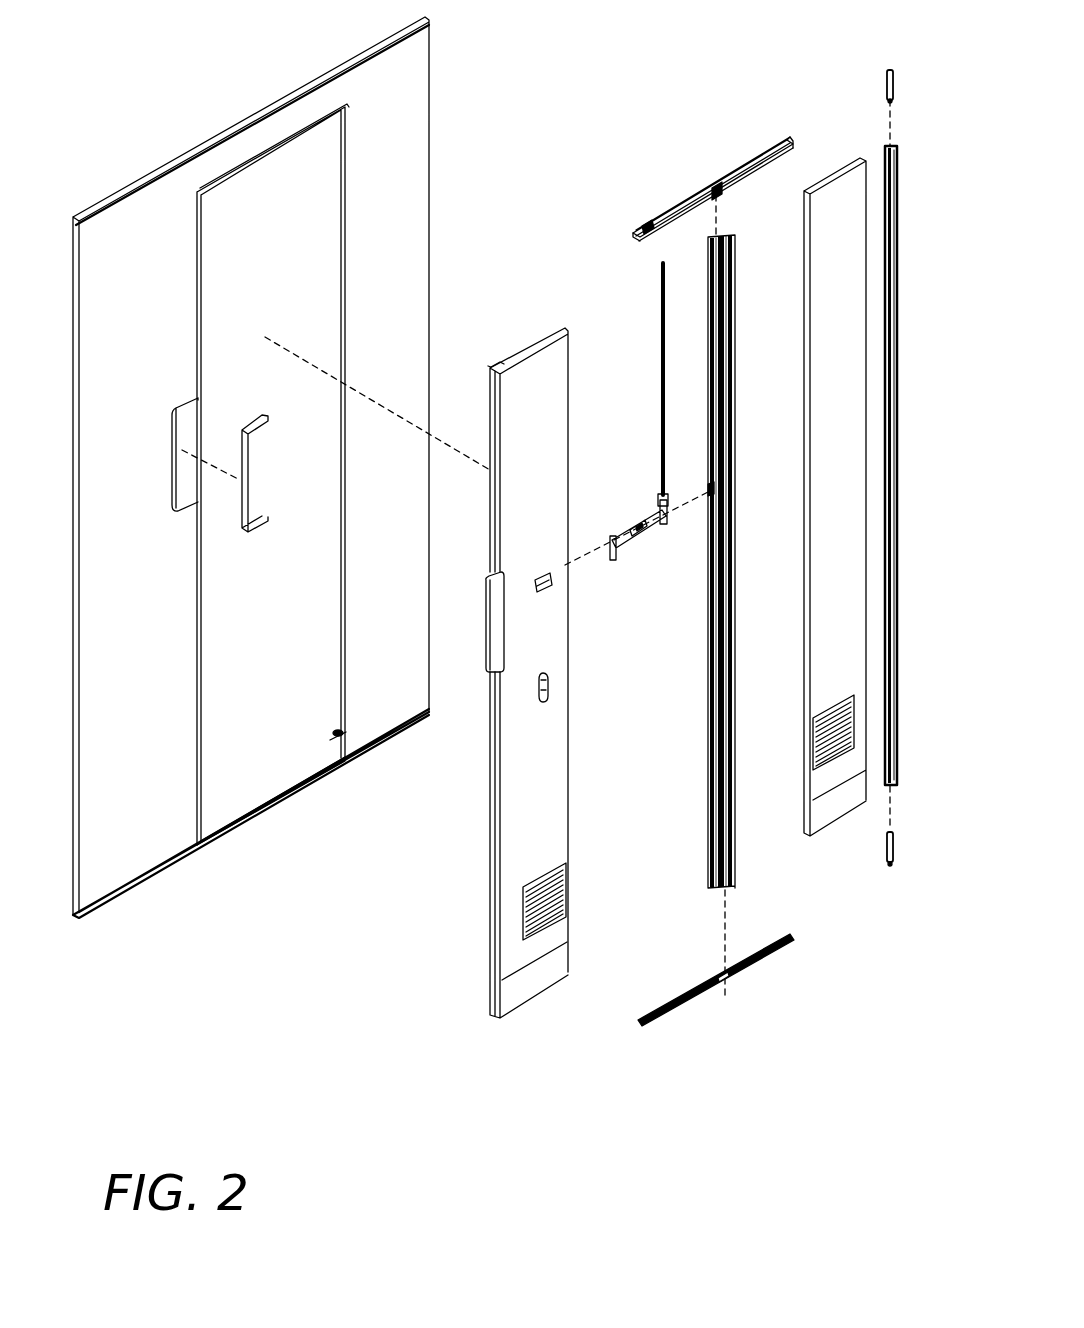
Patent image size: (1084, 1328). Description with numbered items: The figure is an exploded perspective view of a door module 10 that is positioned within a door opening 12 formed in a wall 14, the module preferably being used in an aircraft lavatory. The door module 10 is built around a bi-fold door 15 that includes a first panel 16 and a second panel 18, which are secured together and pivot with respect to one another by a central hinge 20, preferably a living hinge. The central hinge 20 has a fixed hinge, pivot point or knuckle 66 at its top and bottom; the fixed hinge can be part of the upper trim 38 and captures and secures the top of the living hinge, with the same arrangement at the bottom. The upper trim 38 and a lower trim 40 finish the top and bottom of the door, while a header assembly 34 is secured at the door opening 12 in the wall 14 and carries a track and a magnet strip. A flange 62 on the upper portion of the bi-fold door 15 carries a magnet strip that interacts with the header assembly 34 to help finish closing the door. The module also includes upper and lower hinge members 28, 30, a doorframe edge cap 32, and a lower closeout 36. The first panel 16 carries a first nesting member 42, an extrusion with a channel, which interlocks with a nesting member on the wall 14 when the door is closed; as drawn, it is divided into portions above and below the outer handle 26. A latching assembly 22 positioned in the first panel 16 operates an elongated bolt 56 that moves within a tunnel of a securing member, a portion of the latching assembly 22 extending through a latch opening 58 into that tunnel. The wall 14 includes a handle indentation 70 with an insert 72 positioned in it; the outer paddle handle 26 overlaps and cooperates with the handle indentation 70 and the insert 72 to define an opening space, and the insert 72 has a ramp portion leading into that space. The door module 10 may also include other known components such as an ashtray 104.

The door module 10 is at (570, 120).
The door opening 12 is at (273, 467).
The wall 14 is at (287, 466).
The bi-fold door 15 is at (412, 928).
The first panel 16 is at (541, 657).
The second panel 18 is at (836, 325).
The central hinge 20 is at (705, 561).
The latching assembly 22 is at (634, 522).
The outer handle 26 is at (487, 665).
The upper hinge member 28 is at (895, 72).
The lower hinge member 30 is at (895, 848).
The doorframe edge cap 32 is at (900, 462).
The header assembly 34 is at (226, 185).
The lower closeout 36 is at (214, 832).
The upper trim 38 is at (678, 212).
The lower trim 40 is at (770, 952).
The first nesting member 42 is at (490, 370).
The elongated bolt 56 is at (658, 348).
The latch opening 58 is at (710, 492).
The flange 62 is at (713, 150).
The knuckle 66 is at (714, 192).
The handle indentation 70 is at (184, 424).
The insert 72 is at (258, 485).
The ashtray 104 is at (552, 688).